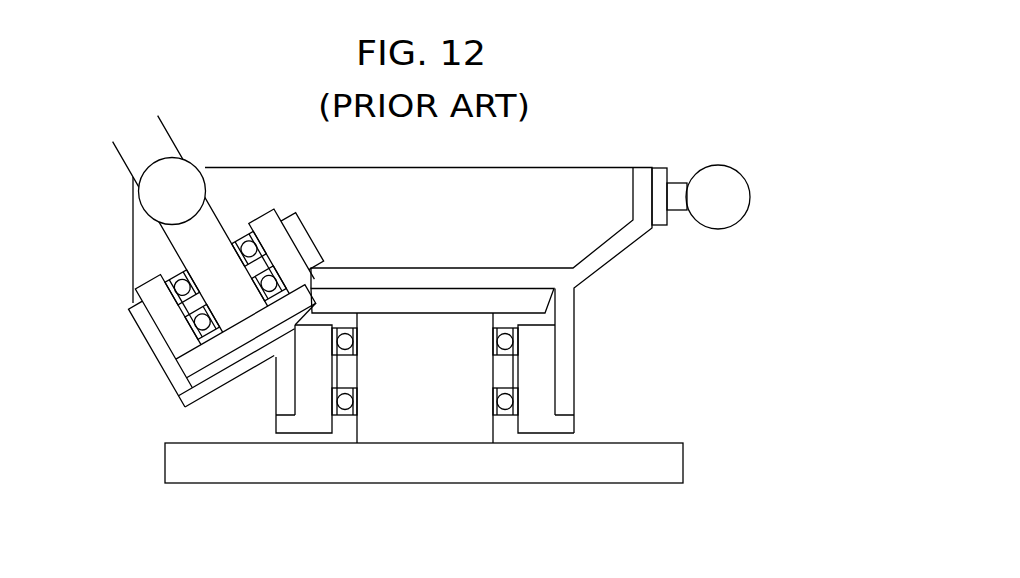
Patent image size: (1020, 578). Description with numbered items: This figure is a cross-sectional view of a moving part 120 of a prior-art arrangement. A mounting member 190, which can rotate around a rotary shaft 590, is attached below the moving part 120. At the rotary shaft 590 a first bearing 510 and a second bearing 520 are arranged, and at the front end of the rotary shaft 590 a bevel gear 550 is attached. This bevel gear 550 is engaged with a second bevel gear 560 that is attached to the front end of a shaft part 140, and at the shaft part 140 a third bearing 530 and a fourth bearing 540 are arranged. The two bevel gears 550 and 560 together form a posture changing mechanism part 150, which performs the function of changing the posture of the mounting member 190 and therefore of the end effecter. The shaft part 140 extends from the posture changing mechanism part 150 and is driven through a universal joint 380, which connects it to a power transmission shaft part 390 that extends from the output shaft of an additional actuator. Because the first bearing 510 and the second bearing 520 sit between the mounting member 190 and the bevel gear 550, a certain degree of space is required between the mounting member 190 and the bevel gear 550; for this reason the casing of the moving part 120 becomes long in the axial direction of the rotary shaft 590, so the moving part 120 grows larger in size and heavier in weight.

The moving part 120 is at (583, 185).
The shaft part 140 is at (194, 238).
The posture changing mechanism part 150 is at (694, 373).
The mounting member 190 is at (662, 462).
The universal joint 380 is at (176, 176).
The power transmission shaft part 390 is at (138, 148).
The first bearing 510 is at (508, 343).
The second bearing 520 is at (508, 402).
The third bearing 530 is at (182, 288).
The fourth bearing 540 is at (212, 353).
The bevel gear 550 is at (527, 303).
The bevel gear 560 is at (192, 387).
The rotary shaft 590 is at (444, 418).